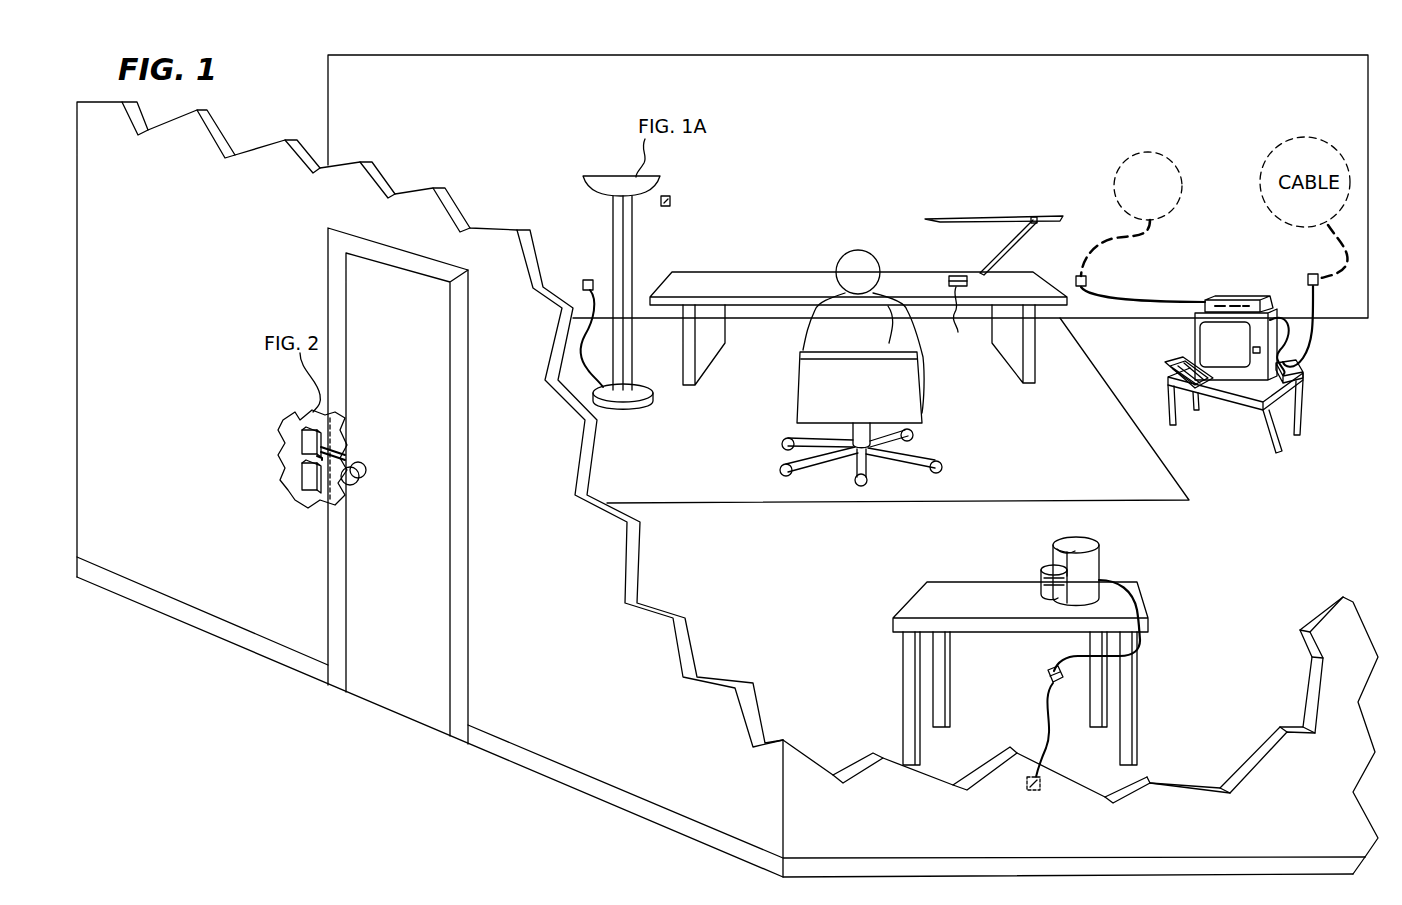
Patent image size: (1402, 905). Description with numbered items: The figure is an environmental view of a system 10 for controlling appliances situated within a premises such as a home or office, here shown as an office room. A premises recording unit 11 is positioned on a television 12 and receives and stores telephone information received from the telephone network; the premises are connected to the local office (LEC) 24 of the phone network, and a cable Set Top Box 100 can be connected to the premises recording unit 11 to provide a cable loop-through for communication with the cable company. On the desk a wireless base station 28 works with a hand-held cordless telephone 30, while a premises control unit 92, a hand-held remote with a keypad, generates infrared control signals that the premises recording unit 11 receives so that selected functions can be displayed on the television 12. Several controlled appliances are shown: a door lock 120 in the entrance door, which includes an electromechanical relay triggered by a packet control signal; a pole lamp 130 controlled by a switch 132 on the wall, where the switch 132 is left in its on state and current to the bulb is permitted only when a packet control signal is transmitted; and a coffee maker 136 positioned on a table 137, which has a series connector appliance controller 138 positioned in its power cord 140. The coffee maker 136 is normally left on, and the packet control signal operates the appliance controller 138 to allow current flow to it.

The system 10 is at (848, 192).
The premises recording unit 11 is at (1238, 300).
The television 12 is at (1229, 386).
The local office (LEC) 24 is at (1153, 152).
The wireless base station 28 is at (962, 321).
The hand-held cordless telephone 30 is at (954, 278).
The premises control unit 92 is at (1165, 362).
The cable Set Top Box 100 is at (1305, 372).
The door lock 120 is at (283, 423).
The pole lamp 130 is at (600, 165).
The switch 132 is at (666, 196).
The coffee maker 136 is at (1054, 548).
The table 137 is at (922, 606).
The series connector appliance controller 138 is at (1045, 677).
The power cord 140 is at (1135, 598).